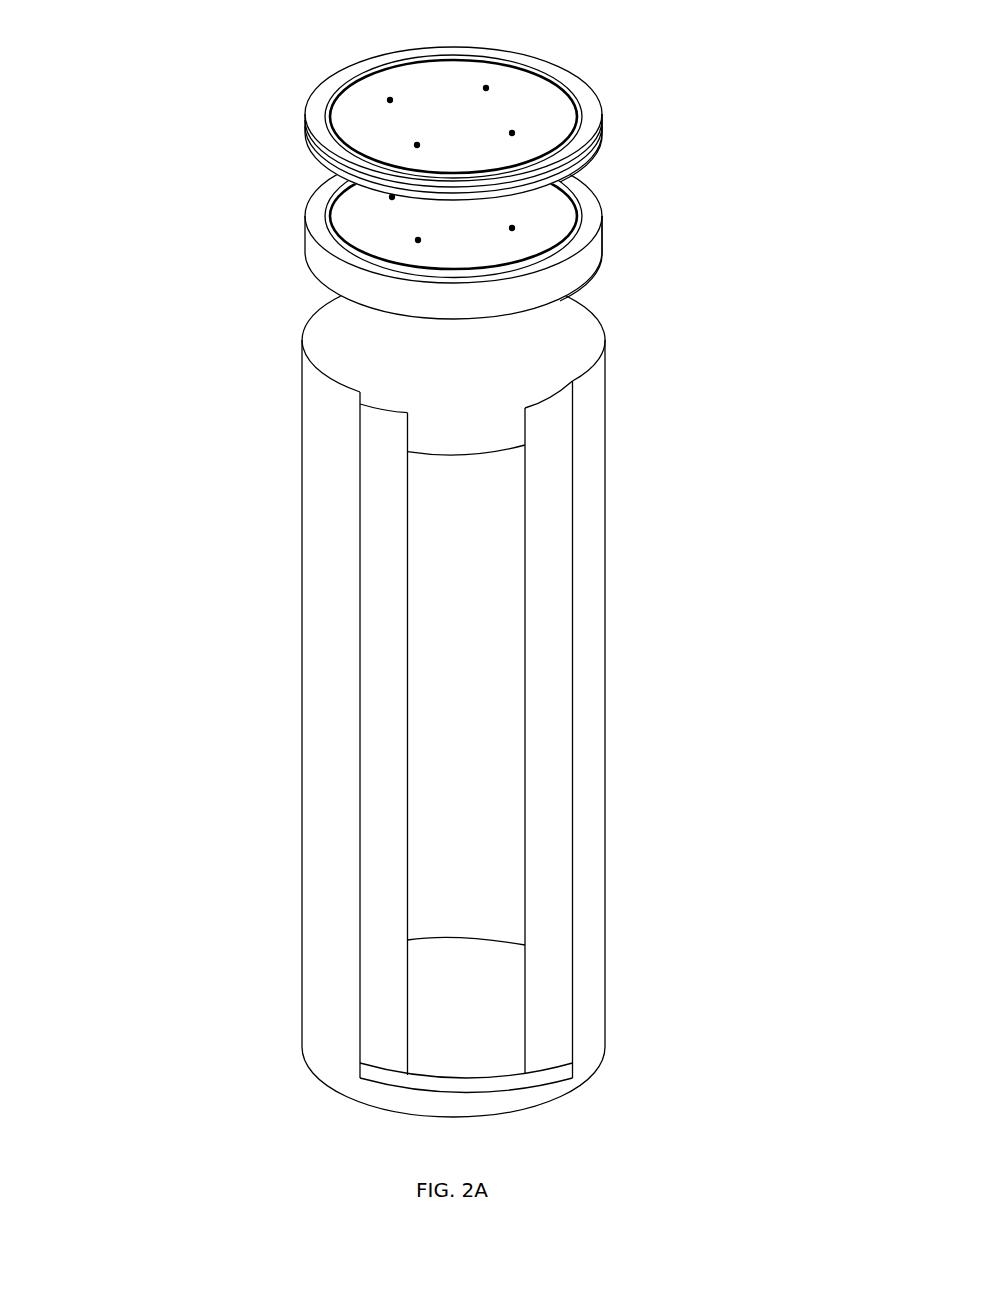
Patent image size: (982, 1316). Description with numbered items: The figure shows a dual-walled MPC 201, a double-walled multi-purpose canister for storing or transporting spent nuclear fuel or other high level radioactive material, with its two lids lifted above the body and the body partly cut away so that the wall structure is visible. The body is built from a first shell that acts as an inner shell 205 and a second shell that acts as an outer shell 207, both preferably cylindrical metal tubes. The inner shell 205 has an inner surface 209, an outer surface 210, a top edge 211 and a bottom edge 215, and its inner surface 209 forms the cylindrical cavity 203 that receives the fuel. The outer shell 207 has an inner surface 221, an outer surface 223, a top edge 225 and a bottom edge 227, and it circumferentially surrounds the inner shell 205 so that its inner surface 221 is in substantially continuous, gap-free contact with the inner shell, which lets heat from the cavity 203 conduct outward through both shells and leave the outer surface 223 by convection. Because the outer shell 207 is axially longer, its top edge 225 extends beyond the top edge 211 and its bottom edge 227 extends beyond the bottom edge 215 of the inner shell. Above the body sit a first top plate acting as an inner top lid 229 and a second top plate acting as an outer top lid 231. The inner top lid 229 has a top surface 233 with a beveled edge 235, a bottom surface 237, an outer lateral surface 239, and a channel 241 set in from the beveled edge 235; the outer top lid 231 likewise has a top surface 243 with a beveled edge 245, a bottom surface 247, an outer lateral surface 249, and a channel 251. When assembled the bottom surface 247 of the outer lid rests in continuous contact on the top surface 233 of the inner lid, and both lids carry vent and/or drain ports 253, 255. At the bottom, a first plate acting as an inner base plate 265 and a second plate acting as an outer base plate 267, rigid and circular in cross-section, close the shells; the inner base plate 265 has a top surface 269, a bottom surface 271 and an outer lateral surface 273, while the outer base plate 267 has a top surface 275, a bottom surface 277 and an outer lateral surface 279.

The dual-walled MPC 201 is at (155, 238).
The cavity 203 is at (497, 818).
The inner shell 205 is at (560, 692).
The outer shell 207 is at (610, 713).
The inner surface 209 is at (410, 767).
The outer surface 210 is at (553, 805).
The top edge 211 is at (537, 403).
The bottom edge 215 is at (550, 1062).
The inner surface 221 is at (567, 651).
The outer surface 223 is at (310, 692).
The top edge 225 is at (335, 383).
The bottom edge 227 is at (342, 1095).
The inner top lid 229 is at (312, 190).
The outer top lid 231 is at (325, 75).
The top surface 233 is at (560, 218).
The beveled edge 235 is at (594, 240).
The bottom surface 237 is at (594, 279).
The outer lateral surface 239 is at (323, 258).
The channel 241 is at (327, 223).
The top surface 243 is at (410, 82).
The beveled edge 245 is at (312, 143).
The bottom surface 247 is at (593, 162).
The outer lateral surface 249 is at (597, 143).
The channel 251 is at (502, 60).
The vent and/or drain port 253 is at (417, 240).
The vent and/or drain port 255 is at (493, 83).
The inner base plate 265 is at (570, 1090).
The outer base plate 267 is at (570, 1090).
The top surface 269 is at (425, 1035).
The bottom surface 271 is at (362, 1083).
The outer lateral surface 273 is at (352, 1124).
The top surface 275 is at (497, 1082).
The bottom surface 277 is at (558, 1098).
The outer lateral surface 279 is at (512, 1098).